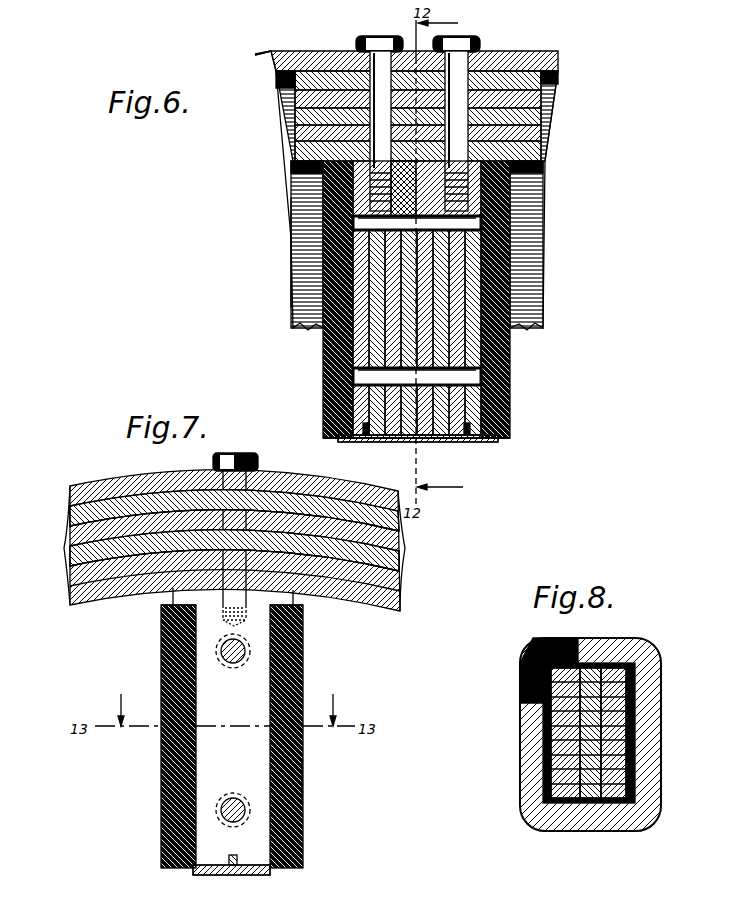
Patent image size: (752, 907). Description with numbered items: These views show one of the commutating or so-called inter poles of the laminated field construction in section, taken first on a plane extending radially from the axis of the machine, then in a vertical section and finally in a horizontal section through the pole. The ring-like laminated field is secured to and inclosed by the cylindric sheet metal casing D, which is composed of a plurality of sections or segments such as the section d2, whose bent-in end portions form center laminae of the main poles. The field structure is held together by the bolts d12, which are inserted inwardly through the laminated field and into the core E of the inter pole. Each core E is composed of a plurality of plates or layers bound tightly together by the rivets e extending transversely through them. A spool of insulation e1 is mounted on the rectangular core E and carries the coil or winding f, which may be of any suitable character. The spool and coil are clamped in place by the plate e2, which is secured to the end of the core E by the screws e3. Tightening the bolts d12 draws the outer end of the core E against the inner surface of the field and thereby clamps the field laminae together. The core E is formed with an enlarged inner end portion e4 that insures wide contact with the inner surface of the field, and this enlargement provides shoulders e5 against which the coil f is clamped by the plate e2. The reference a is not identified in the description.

In FIG. 6, the cylindric sheet metal casing D is at (276, 55).
In FIG. 6, the side plates a is at (542, 125).
In FIG. 6, the casing section d2 is at (548, 42).
In FIG. 6, the bolt d12 is at (350, 32).
In FIG. 7, the bolt d12 is at (250, 456).
In FIG. 6, the rivet e is at (315, 235).
In FIG. 7, the rivet e is at (225, 656).
In FIG. 6, the spool of insulation e1 is at (492, 431).
In FIG. 7, the spool of insulation e1 is at (297, 858).
In FIG. 6, the plate e2 is at (486, 436).
In FIG. 7, the plate e2 is at (200, 868).
In FIG. 6, the screw e3 is at (359, 434).
In FIG. 7, the screw e3 is at (220, 868).
In FIG. 7, the enlarged inner end portion e4 is at (288, 598).
In FIG. 6, the shoulder e5 is at (283, 182).
In FIG. 7, the shoulder e5 is at (155, 598).
In FIG. 6, the coil or winding f is at (520, 300).
In FIG. 7, the coil or winding f is at (296, 792).
In FIG. 8, the coil or winding f is at (516, 752).
In FIG. 6, the core E is at (455, 352).
In FIG. 8, the core E is at (640, 745).